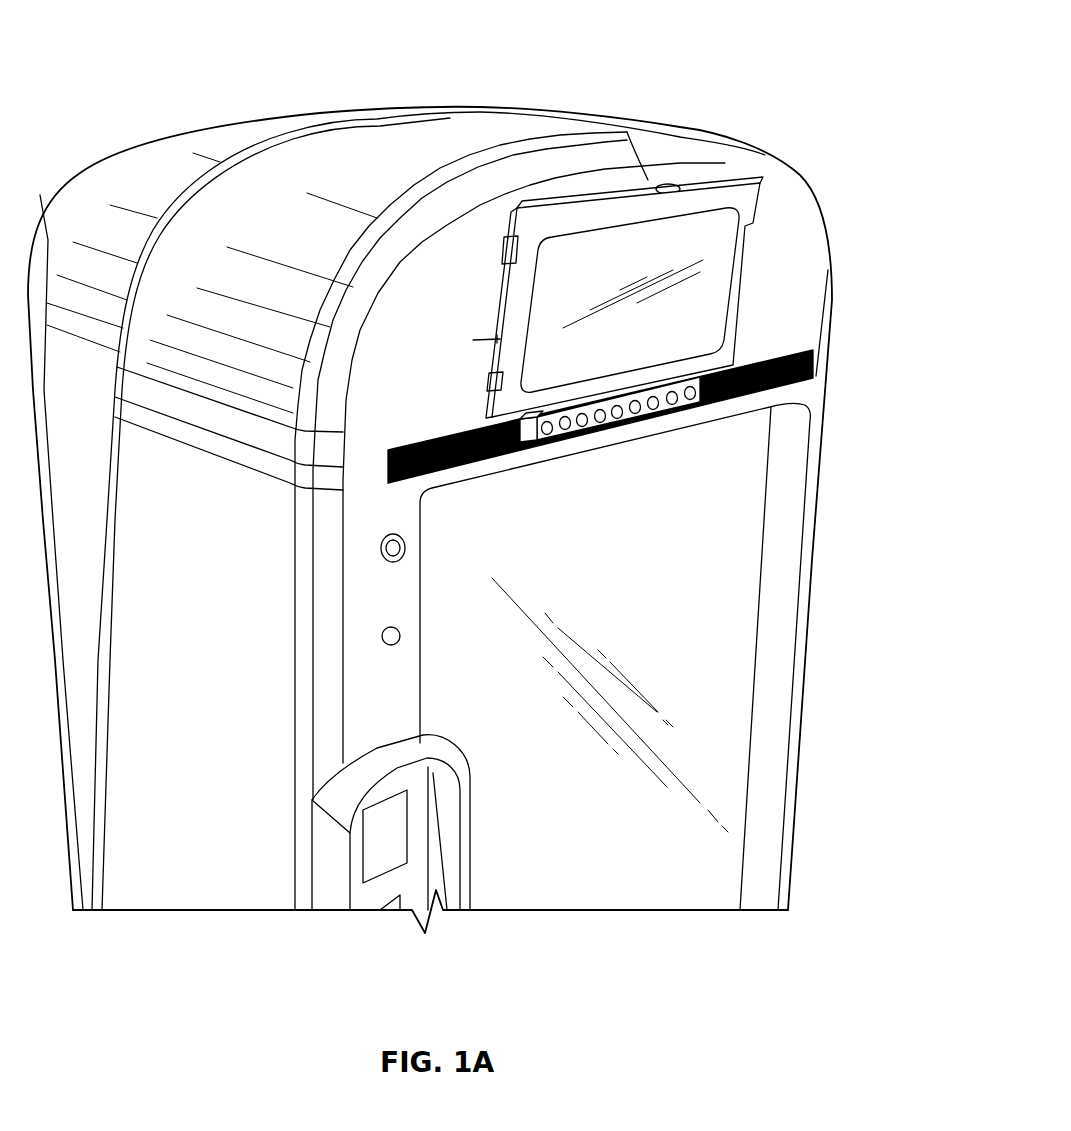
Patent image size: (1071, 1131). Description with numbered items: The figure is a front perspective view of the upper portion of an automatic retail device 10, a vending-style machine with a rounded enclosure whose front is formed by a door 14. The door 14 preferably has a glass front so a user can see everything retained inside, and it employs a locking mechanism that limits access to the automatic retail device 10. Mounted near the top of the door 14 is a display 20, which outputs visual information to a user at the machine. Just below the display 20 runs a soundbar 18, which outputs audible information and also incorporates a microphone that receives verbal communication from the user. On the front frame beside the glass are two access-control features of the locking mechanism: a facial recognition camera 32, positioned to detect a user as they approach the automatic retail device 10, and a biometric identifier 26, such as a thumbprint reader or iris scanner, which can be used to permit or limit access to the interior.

The automatic retail device 10 is at (847, 53).
The door 14 is at (790, 523).
The soundbar 18 is at (807, 367).
The display 20 is at (712, 275).
The biometric identifier 26 is at (381, 640).
The facial recognition camera 32 is at (380, 550).